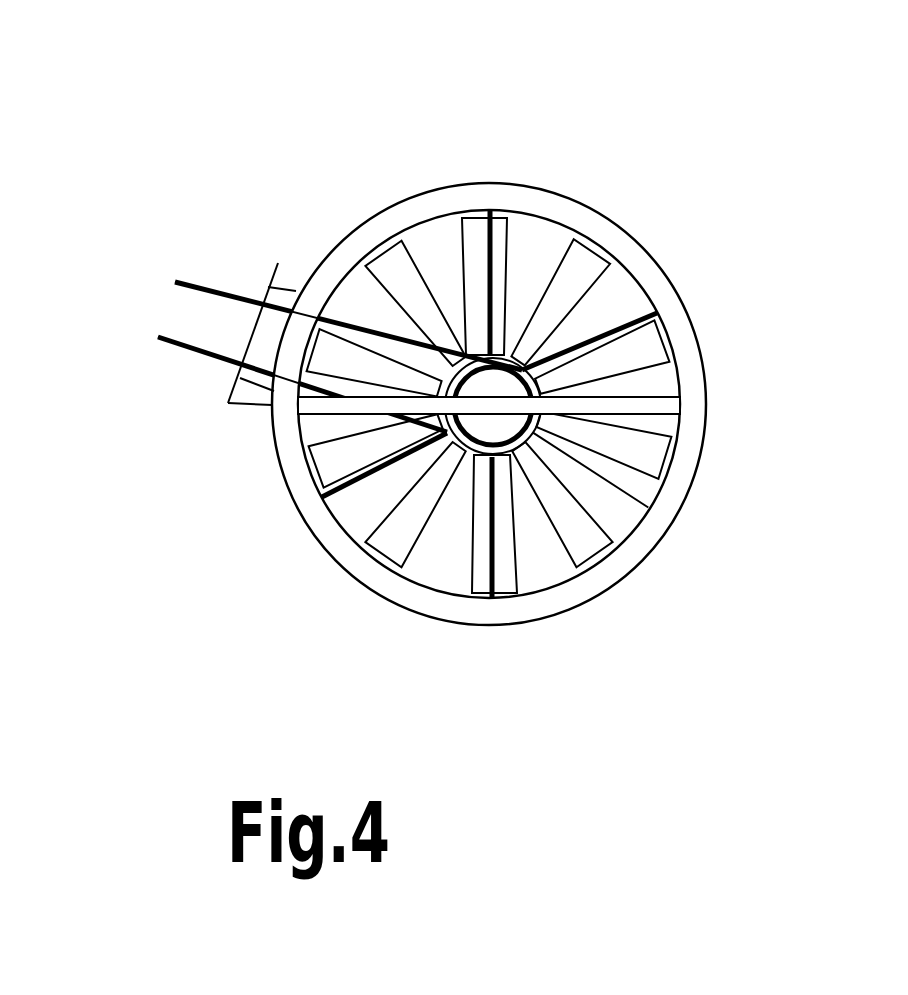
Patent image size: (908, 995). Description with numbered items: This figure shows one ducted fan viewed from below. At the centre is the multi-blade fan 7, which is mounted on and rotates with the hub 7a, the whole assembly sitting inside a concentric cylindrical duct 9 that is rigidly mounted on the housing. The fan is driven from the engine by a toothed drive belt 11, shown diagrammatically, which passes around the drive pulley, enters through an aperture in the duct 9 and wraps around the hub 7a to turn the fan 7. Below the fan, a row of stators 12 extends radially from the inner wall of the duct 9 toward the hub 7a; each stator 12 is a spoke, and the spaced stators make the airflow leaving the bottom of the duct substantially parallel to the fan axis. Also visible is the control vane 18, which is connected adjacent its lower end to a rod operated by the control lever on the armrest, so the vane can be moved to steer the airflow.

The multi-blade fan 7 is at (473, 237).
The hub 7a is at (492, 388).
The cylindrical duct 9 is at (342, 251).
The drive belt 11 is at (197, 352).
The stator 12 is at (487, 573).
The control vane 18 is at (670, 409).